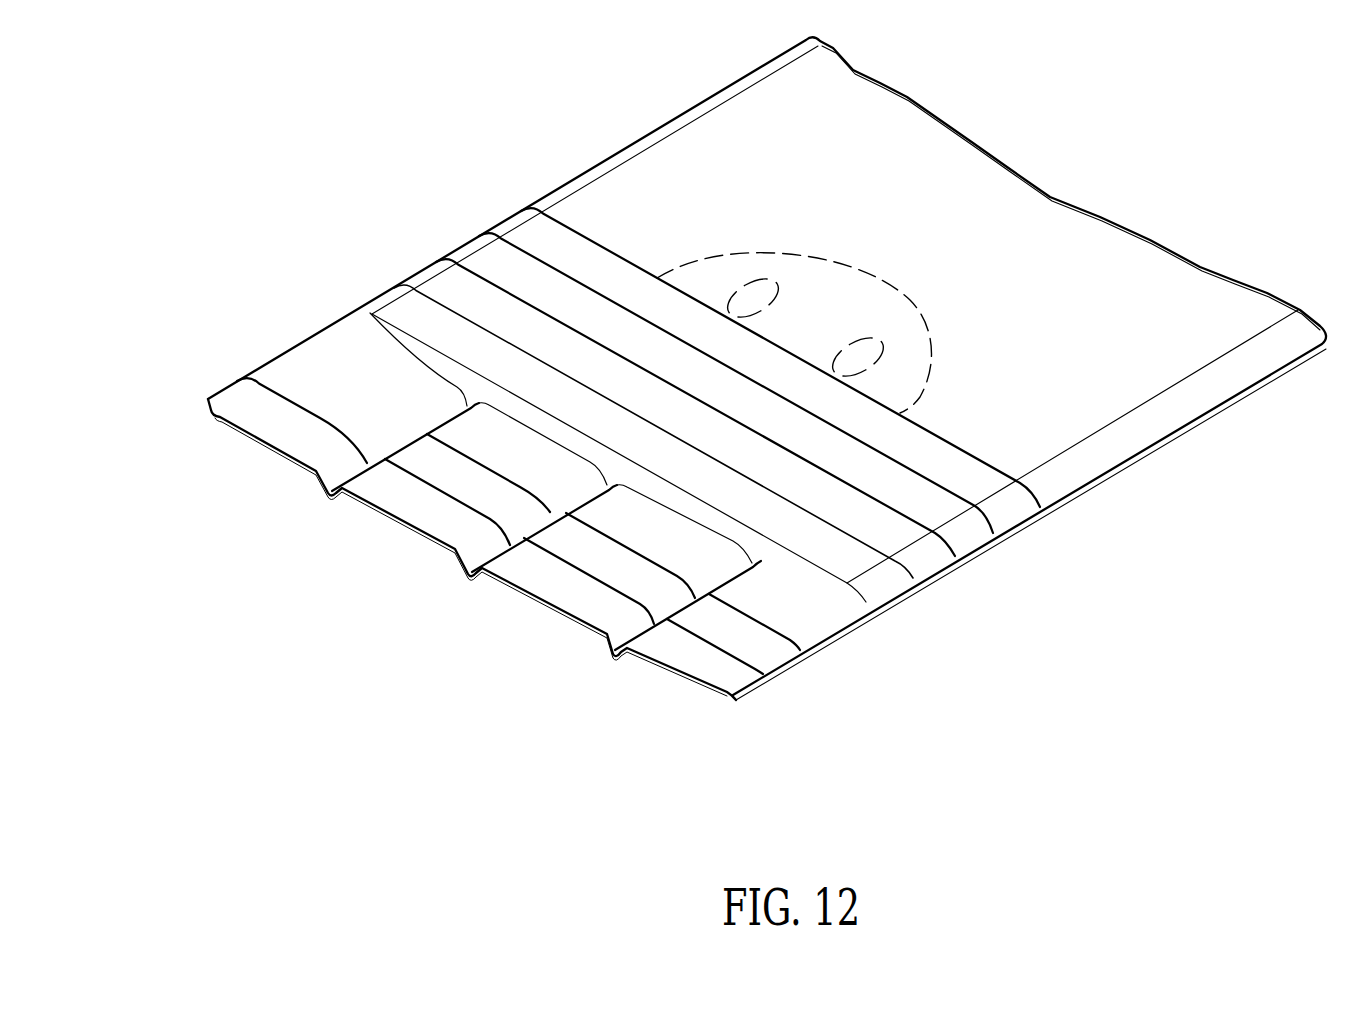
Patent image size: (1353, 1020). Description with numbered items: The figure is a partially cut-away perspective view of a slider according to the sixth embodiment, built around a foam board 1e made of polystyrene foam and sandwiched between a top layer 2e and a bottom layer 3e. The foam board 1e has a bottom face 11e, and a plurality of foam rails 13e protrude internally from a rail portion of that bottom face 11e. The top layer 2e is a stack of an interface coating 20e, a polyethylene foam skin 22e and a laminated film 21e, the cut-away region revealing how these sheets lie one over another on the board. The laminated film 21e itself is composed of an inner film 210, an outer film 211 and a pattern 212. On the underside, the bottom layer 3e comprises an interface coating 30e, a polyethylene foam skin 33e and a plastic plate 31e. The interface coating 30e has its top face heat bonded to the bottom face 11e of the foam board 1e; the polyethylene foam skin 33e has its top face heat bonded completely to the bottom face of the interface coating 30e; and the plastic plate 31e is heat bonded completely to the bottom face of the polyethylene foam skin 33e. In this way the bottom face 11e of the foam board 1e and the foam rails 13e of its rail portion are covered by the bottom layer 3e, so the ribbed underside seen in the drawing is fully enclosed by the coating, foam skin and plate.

The foam board 1e is at (737, 414).
The top layer 2e is at (767, 401).
The interface coating 20e is at (923, 560).
The laminated film 21e is at (888, 419).
The inner film 210 is at (811, 414).
The outer film 211 is at (1077, 468).
The pattern 212 is at (927, 381).
The polyethylene foam skin 22e is at (972, 530).
The bottom layer 3e is at (474, 401).
The interface coating 30e is at (347, 348).
The plastic plate 31e is at (327, 218).
The polyethylene foam skin 33e is at (303, 387).
The bottom face 11e is at (823, 583).
The foam rails 13e is at (759, 562).